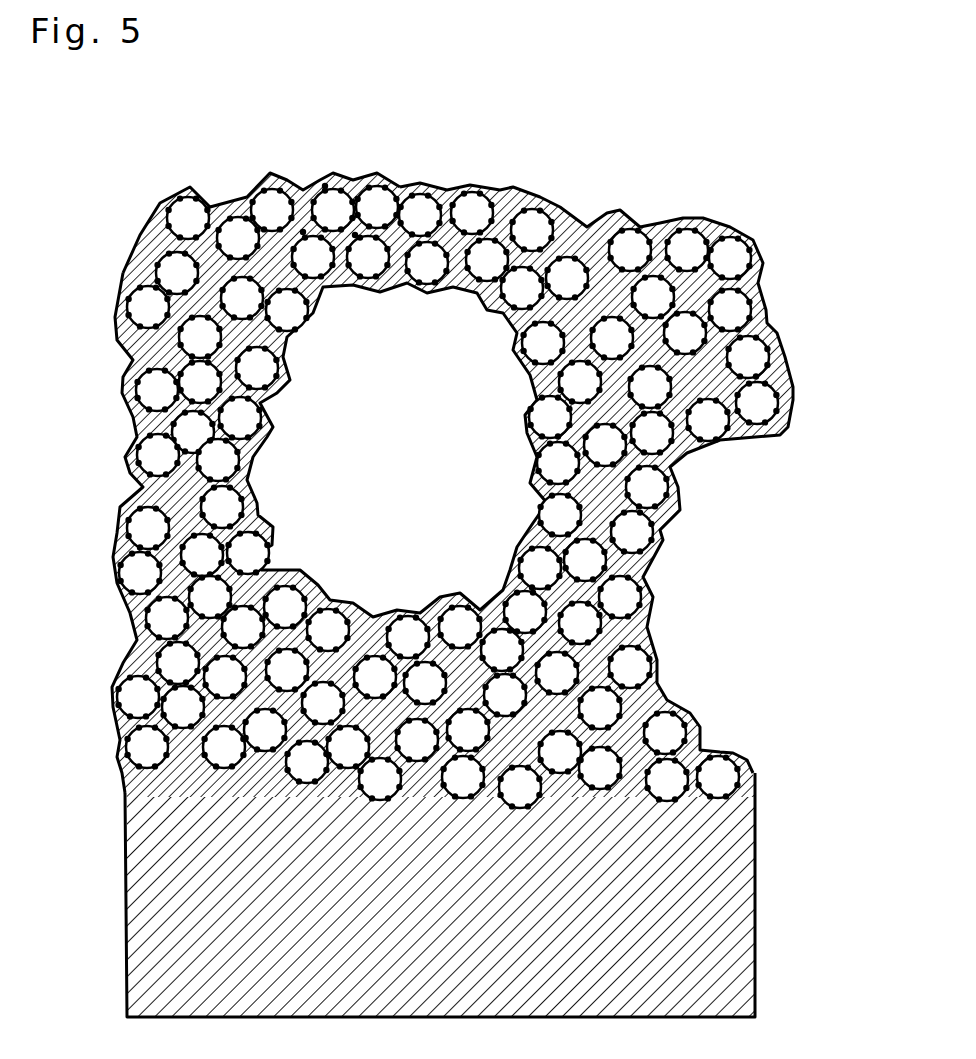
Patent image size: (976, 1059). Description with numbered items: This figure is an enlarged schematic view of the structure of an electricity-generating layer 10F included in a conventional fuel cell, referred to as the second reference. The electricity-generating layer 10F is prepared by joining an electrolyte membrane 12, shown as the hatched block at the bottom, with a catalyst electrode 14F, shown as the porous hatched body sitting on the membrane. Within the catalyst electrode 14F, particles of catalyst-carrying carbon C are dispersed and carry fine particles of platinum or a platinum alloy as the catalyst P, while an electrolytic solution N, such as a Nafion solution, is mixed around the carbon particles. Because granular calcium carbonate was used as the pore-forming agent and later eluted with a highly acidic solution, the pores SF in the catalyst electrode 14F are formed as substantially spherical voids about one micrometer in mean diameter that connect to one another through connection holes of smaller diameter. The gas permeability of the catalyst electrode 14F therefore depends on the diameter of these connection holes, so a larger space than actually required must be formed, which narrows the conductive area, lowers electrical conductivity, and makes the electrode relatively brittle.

The electricity-generating layer 10F is at (665, 160).
The catalyst electrode 14F is at (790, 432).
The electrolyte membrane 12 is at (755, 843).
The catalyst P is at (255, 183).
The catalyst-carrying carbon C is at (273, 208).
The electrolytic solution N is at (325, 185).
The pores SF is at (407, 358).